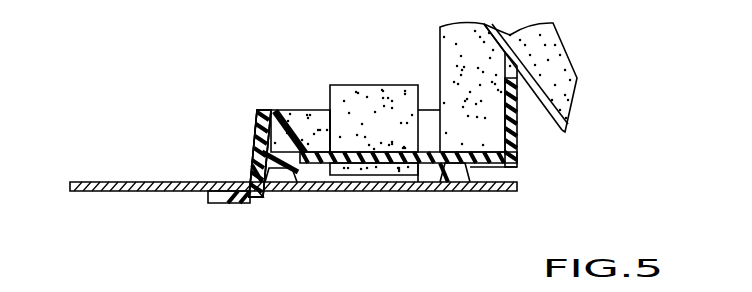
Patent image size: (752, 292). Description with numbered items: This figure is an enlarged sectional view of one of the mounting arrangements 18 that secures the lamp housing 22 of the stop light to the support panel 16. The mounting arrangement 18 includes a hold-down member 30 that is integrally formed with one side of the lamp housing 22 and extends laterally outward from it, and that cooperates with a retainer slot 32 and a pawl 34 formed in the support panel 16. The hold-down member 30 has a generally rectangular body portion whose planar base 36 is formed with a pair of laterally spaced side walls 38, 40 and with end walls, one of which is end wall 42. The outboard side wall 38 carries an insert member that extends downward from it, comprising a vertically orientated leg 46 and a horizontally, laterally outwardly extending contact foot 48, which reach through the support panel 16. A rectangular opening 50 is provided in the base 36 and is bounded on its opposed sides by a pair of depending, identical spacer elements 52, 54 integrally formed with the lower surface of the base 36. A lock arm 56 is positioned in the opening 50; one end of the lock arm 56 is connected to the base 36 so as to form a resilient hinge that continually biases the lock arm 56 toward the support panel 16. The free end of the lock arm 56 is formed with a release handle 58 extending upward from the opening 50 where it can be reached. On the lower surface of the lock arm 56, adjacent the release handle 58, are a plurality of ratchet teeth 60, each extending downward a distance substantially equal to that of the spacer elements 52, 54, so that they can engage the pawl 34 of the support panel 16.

The support panel 16 is at (122, 182).
The mounting arrangement 18 is at (308, 104).
The lamp housing 22 is at (547, 75).
The hold-down member 30 is at (254, 115).
The retainer slot 32 is at (273, 191).
The pawl 34 is at (393, 191).
The planar base 36 is at (280, 127).
The outboard side wall 38 is at (262, 146).
The side wall 40 is at (520, 120).
The end wall 42 is at (302, 124).
The leg 46 is at (250, 172).
The contact foot 48 is at (240, 206).
The rectangular opening 50 is at (428, 150).
The spacer element 52 is at (475, 182).
The spacer element 54 is at (340, 191).
The lock arm 56 is at (373, 76).
The release handle 58 is at (330, 110).
The ratchet teeth 60 is at (424, 191).